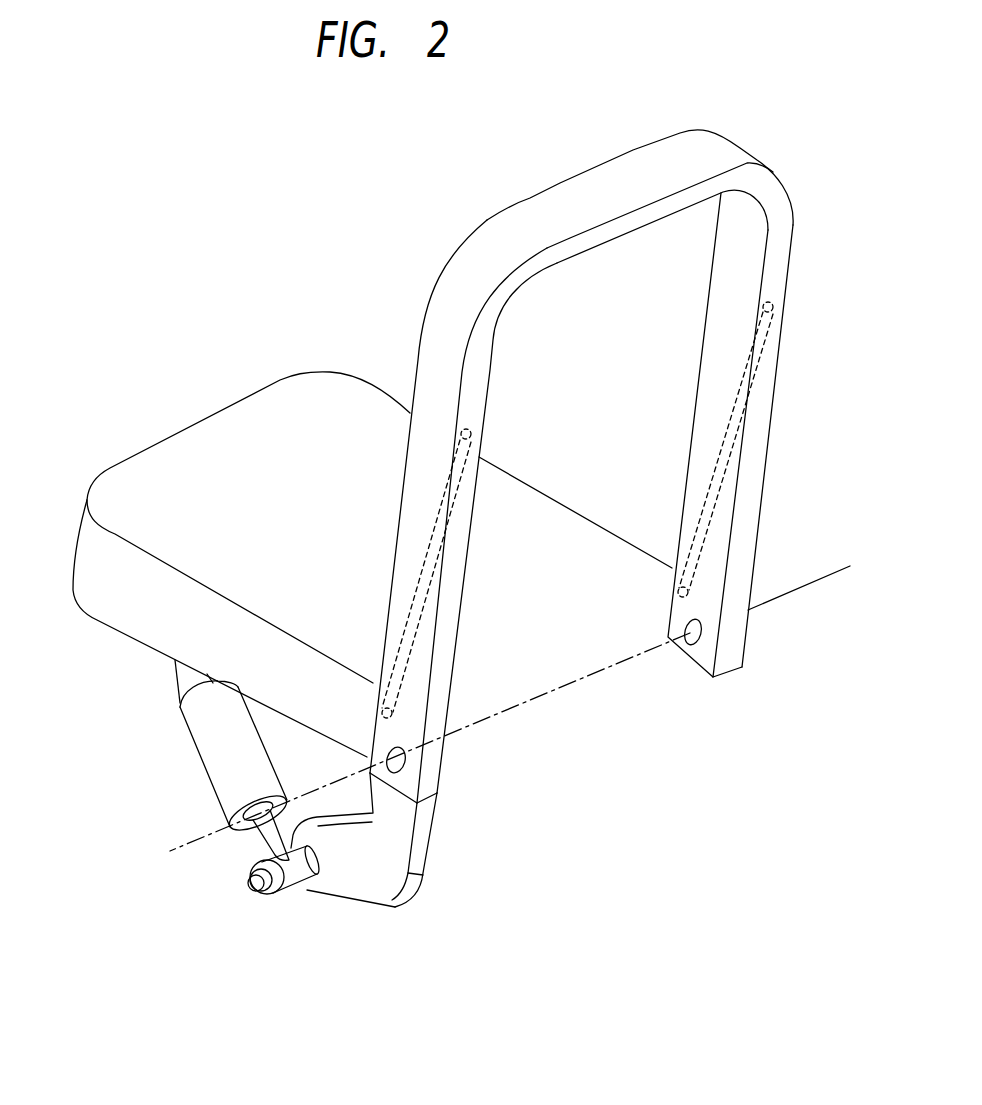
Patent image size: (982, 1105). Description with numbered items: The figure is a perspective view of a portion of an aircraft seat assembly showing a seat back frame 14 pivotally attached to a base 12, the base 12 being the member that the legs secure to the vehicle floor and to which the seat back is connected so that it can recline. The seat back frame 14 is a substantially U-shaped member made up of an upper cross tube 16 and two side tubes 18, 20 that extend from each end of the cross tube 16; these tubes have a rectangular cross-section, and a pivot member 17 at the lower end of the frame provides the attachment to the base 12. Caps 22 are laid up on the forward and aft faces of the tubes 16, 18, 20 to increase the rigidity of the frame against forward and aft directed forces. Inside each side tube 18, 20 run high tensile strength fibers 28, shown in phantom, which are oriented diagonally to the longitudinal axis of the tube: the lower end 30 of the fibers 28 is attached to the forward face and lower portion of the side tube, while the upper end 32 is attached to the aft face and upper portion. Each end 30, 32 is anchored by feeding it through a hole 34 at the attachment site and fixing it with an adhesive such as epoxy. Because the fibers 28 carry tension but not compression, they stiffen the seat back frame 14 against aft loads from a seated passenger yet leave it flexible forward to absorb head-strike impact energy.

The base 12 is at (196, 420).
The seat back frame 14 is at (340, 195).
The upper cross tube 16 is at (604, 165).
The pivot member 17 is at (350, 905).
The side tube 18 is at (432, 288).
The side tube 20 is at (763, 477).
The caps 22 is at (640, 220).
The fibers 28 is at (407, 610).
The lower end 30 is at (392, 671).
The upper end 32 is at (452, 458).
The hole 34 is at (470, 434).